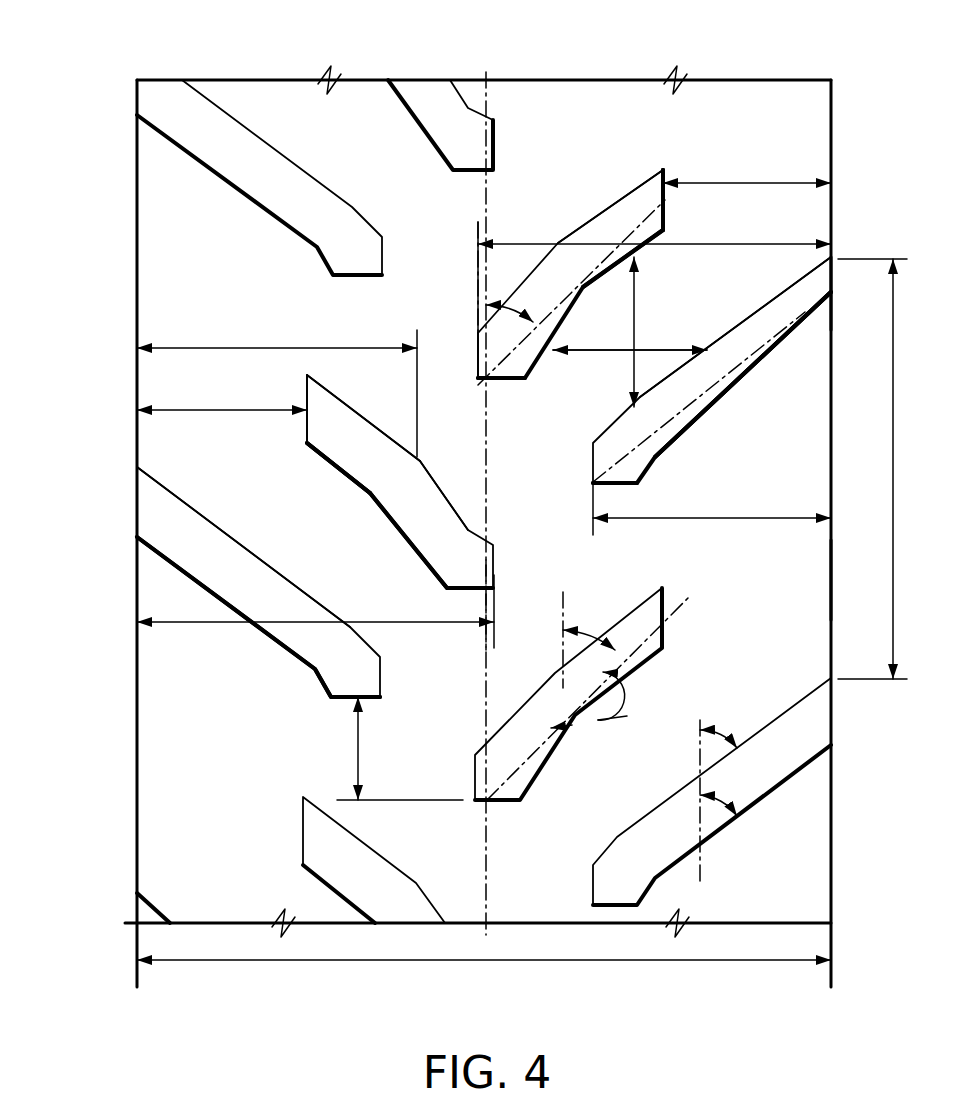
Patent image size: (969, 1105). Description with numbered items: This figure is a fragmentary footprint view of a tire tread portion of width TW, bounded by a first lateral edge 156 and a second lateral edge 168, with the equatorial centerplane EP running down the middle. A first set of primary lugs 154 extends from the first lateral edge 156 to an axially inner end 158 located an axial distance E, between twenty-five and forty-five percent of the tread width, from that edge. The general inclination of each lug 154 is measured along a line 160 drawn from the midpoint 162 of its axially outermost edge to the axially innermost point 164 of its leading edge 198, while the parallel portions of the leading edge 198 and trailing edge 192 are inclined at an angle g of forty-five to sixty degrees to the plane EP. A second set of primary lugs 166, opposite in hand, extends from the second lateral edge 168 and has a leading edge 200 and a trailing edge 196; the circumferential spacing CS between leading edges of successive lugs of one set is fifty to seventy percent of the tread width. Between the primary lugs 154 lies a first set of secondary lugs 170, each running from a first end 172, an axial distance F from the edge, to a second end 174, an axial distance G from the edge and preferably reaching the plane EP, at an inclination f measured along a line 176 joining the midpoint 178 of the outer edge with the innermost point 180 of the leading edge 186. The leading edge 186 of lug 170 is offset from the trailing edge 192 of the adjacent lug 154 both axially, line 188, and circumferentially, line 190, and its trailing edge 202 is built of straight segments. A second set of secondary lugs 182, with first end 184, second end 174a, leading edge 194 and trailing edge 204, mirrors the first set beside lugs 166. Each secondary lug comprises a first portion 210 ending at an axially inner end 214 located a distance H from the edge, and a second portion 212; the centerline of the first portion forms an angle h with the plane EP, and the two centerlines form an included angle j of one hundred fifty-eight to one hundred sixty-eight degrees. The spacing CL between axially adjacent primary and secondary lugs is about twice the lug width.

The primary lug of first set 154 is at (783, 347).
The first lateral edge 156 is at (831, 570).
The axially inner end 158 is at (623, 478).
The line 160 is at (716, 383).
The midpoint 162 is at (831, 292).
The axially innermost point 164 is at (590, 445).
The primary lug of second set 166 is at (230, 165).
The second lateral edge 168 is at (136, 372).
The secondary lug of first set 170 is at (550, 322).
The first end 172 is at (667, 222).
The second end 174 is at (512, 357).
The second end 174a is at (490, 585).
The line 176 is at (600, 255).
The midpoint 178 is at (666, 202).
The axially innermost point 180 is at (480, 383).
The secondary lug of second set 182 is at (430, 125).
The first end 184 is at (310, 423).
The leading edge 186 is at (600, 280).
The axial line 188 is at (612, 353).
The circumferential line 190 is at (637, 303).
The trailing edge 192 is at (752, 316).
The leading edge 194 is at (348, 477).
The trailing edge 196 is at (240, 543).
The leading edge 198 is at (695, 426).
The leading edge 200 is at (293, 657).
The trailing edge 202 is at (610, 207).
The trailing edge 204 is at (377, 423).
The first portion 210 is at (330, 443).
The second portion 212 is at (433, 532).
The axially inner end of first portion 214 is at (420, 488).
The equatorial centerplane EP is at (489, 98).
The tread width TW is at (484, 978).
The circumferential spacing CS is at (885, 469).
The circumferential spacing CL is at (358, 756).
The axial distance E is at (712, 503).
The axial distance F is at (484, 282).
The axial distance G is at (484, 431).
The distance H is at (277, 388).
The inclination angle f is at (513, 300).
The inclination angle g is at (722, 725).
The angle h is at (594, 625).
The included angle j is at (595, 700).